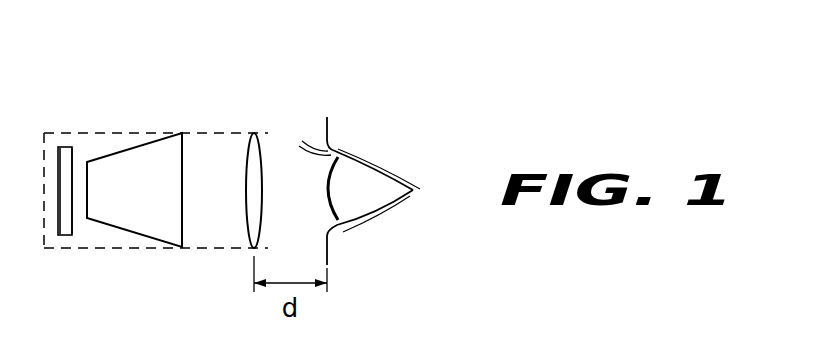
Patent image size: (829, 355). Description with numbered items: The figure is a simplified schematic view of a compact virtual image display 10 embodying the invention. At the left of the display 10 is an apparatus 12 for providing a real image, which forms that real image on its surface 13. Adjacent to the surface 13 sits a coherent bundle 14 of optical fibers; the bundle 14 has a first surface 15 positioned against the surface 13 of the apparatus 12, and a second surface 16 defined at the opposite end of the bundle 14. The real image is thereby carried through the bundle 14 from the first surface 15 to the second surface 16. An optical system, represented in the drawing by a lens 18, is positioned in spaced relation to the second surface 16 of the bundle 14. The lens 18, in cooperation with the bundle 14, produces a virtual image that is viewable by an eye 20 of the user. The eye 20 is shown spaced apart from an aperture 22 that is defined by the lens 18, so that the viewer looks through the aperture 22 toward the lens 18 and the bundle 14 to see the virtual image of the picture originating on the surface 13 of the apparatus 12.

The compact virtual image display 10 is at (259, 61).
The apparatus for providing a real image 12 is at (59, 236).
The surface 13 is at (83, 147).
The coherent bundle of optical fibers 14 is at (160, 232).
The first surface 15 is at (89, 196).
The second surface 16 is at (183, 233).
The lens 18 is at (253, 137).
The eye 20 is at (392, 243).
The aperture 22 is at (281, 163).